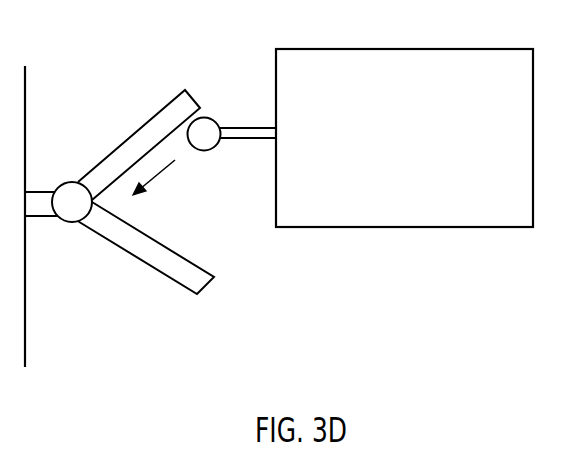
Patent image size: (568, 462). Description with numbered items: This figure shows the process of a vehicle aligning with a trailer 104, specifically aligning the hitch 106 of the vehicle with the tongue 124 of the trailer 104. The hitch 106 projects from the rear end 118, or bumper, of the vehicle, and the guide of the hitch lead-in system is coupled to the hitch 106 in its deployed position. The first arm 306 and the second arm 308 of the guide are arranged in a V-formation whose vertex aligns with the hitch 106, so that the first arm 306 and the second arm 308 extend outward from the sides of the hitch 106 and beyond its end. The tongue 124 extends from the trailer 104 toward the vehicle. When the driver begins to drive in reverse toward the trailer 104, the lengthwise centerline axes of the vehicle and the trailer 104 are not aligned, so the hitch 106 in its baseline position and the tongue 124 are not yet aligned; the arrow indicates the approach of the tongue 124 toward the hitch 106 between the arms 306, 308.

The trailer 104 is at (366, 58).
The hitch 106 is at (71, 217).
The rear end 118 is at (26, 101).
The tongue 124 is at (241, 135).
The first arm 306 is at (165, 115).
The second arm 308 is at (200, 285).